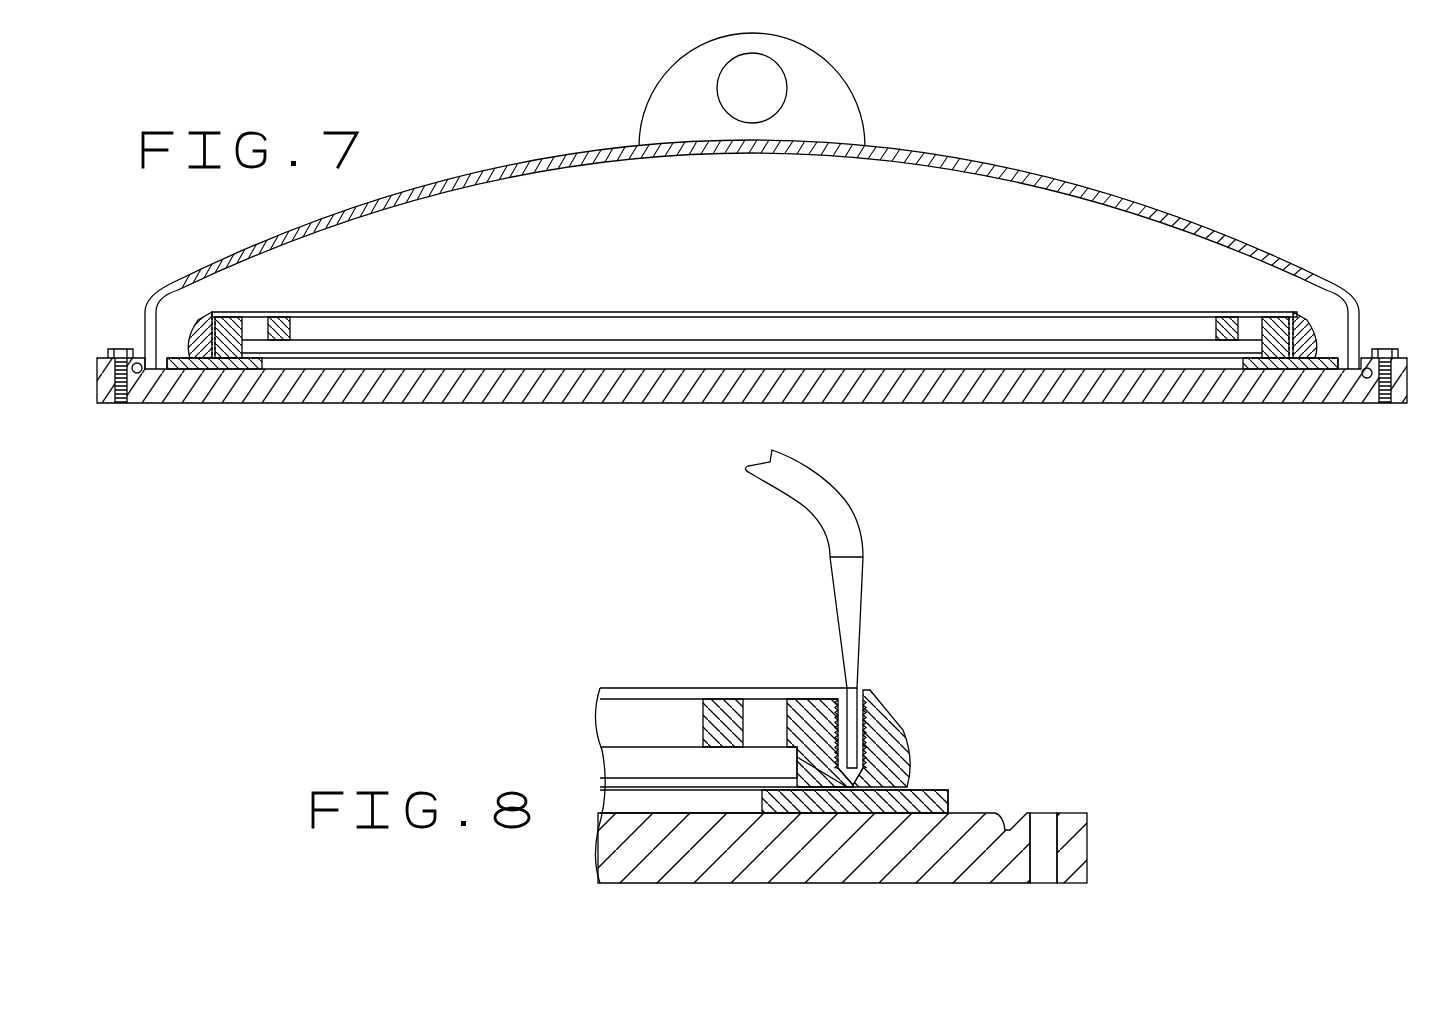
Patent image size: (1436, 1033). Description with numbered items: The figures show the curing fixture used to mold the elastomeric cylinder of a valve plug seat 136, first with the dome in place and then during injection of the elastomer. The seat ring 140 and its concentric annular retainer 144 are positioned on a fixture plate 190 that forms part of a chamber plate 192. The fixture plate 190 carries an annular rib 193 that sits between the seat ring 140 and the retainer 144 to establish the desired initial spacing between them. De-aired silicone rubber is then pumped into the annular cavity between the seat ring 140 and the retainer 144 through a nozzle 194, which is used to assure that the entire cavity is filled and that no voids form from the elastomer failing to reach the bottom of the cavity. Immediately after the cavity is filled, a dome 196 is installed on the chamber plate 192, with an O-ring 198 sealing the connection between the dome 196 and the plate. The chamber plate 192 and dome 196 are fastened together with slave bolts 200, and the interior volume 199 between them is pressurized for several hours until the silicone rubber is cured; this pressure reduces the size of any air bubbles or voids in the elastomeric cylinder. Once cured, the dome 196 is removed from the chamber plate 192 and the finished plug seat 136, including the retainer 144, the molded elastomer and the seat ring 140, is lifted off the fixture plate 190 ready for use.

In FIG. 7, the annular plug seat 136 is at (250, 297).
In FIG. 7, the seat ring 140 is at (197, 318).
In FIG. 8, the seat ring 140 is at (903, 737).
In FIG. 7, the annular retainer 144 is at (278, 317).
In FIG. 8, the annular retainer 144 is at (725, 697).
In FIG. 7, the fixture plate 190 is at (184, 368).
In FIG. 8, the fixture plate 190 is at (852, 792).
In FIG. 7, the chamber plate 192 is at (226, 403).
In FIG. 8, the chamber plate 192 is at (672, 884).
In FIG. 8, the annular rib 193 is at (855, 783).
In FIG. 8, the nozzle 194 is at (860, 633).
In FIG. 7, the dome 196 is at (1112, 190).
In FIG. 7, the O-ring 198 is at (1343, 377).
In FIG. 7, the interior volume 199 is at (1160, 266).
In FIG. 7, the slave bolt 200 is at (1387, 347).